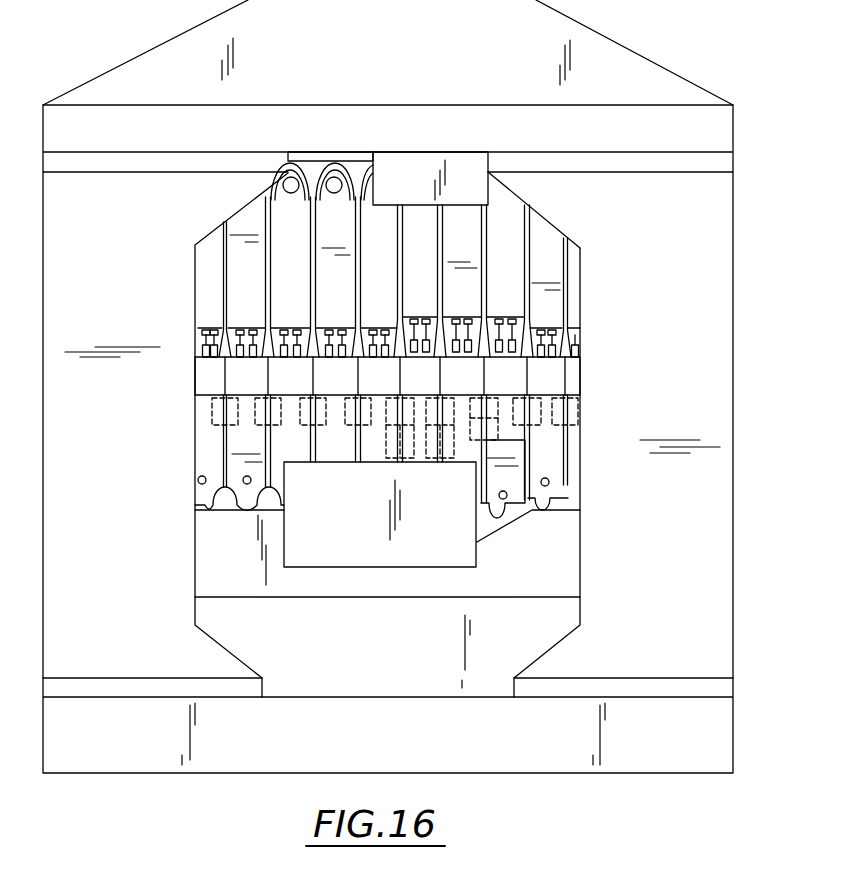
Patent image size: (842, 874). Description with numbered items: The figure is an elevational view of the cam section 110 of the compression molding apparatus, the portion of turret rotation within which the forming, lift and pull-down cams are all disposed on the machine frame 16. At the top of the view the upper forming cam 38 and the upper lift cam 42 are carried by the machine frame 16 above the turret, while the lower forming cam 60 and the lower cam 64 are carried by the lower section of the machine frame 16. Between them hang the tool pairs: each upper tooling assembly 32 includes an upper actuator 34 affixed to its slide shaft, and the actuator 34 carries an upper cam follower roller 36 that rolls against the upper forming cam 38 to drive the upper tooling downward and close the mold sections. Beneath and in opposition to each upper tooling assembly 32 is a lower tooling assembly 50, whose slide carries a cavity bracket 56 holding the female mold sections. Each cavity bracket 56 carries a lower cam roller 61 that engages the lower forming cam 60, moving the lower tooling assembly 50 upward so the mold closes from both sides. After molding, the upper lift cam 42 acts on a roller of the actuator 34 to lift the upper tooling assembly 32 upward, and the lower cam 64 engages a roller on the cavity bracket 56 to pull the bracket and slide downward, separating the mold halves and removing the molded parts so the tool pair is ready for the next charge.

The machine frame 16 is at (632, 62).
The upper tooling assembly 32 is at (523, 258).
The upper actuator 34 is at (283, 273).
The upper cam follower roller 36 is at (346, 161).
The upper forming cam 38 is at (317, 160).
The upper lift cam 42 is at (475, 165).
The lower tooling assembly 50 is at (527, 468).
The cavity bracket 56 is at (562, 440).
The lower forming cam 60 is at (571, 554).
The lower cam roller 61 is at (243, 509).
The lower cam 64 is at (400, 553).
The cam section 110 is at (733, 235).